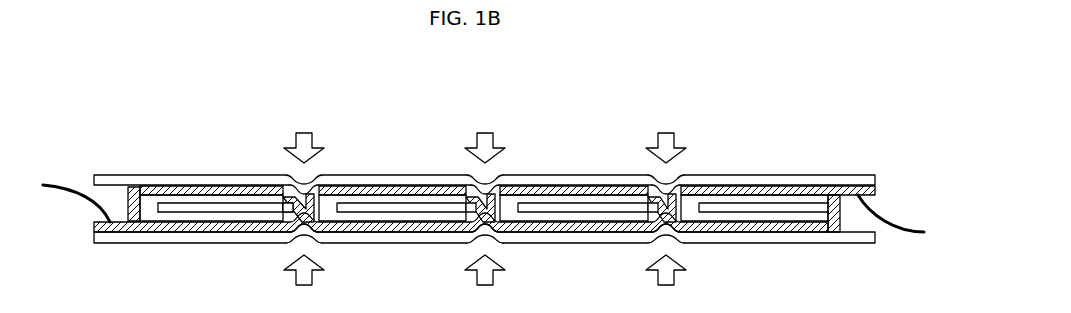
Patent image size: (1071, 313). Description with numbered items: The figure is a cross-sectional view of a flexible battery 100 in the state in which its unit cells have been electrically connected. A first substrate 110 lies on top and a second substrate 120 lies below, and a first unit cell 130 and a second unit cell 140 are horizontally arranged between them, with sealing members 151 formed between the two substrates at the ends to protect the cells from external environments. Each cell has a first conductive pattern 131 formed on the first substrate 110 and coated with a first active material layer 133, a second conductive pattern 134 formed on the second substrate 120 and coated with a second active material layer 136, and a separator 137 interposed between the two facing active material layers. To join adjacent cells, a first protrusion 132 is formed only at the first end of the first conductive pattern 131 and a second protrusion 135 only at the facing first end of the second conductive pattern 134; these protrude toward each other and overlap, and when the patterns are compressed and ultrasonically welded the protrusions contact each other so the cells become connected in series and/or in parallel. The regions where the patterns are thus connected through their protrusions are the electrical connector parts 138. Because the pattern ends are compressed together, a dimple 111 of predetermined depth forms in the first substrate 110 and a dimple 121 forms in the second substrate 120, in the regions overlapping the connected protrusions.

The flexible battery 100 is at (892, 127).
The first substrate 110 is at (876, 180).
The dimple 111 is at (670, 179).
The second substrate 120 is at (876, 238).
The dimple 121 is at (667, 243).
The first unit cell 130 is at (295, 189).
The first conductive pattern 131 is at (143, 188).
The first protrusion 132 is at (318, 203).
The first active material layer 133 is at (200, 190).
The second conductive pattern 134 is at (173, 216).
The second protrusion 135 is at (350, 197).
The second active material layer 136 is at (232, 207).
The separator 137 is at (264, 216).
The electrical connector part 138 is at (500, 208).
The second unit cell 140 is at (422, 189).
The sealing member 151 is at (128, 205).